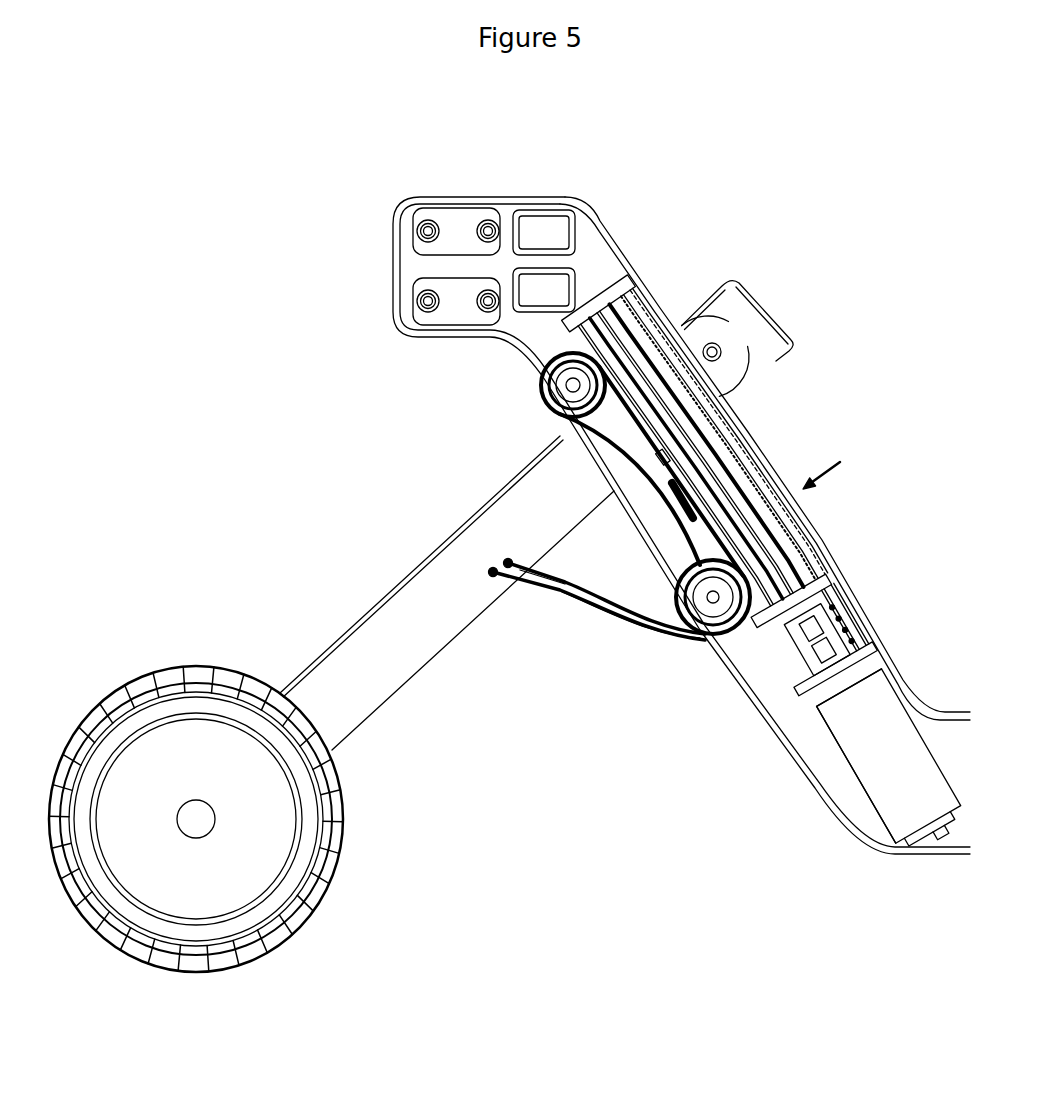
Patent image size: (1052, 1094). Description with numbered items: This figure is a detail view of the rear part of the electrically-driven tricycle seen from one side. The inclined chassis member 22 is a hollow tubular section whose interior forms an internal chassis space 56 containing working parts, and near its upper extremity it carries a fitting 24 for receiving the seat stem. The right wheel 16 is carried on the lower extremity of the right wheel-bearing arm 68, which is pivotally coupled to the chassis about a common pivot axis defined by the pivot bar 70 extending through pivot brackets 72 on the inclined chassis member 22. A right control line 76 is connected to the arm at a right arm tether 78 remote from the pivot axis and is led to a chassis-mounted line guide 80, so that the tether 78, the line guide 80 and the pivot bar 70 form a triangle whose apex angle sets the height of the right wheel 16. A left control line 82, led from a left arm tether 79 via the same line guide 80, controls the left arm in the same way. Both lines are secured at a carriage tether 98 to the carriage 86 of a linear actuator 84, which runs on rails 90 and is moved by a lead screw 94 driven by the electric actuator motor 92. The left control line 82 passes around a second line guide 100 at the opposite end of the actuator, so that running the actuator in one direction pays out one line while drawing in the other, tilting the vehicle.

The right rear wheel 16 is at (345, 867).
The inclined chassis member 22 is at (772, 748).
The fitting 24 is at (457, 242).
The internal chassis space 56 is at (840, 763).
The right wheel-bearing arm 68 is at (425, 690).
The pivot bar 70 is at (714, 343).
The pivot brackets 72 is at (745, 393).
The right control line 76 is at (545, 578).
The right arm tether 78 is at (511, 557).
The left arm tether 79 is at (490, 576).
The chassis-mounted line guide 80 is at (690, 596).
The left control line 82 is at (557, 600).
The linear actuator 84 is at (836, 469).
The carriage 86 is at (660, 470).
The rails 90 is at (757, 450).
The electric actuator motor 92 is at (894, 708).
The lead screw 94 is at (803, 557).
The carriage tether 98 is at (683, 507).
The second line guide 100 is at (550, 412).